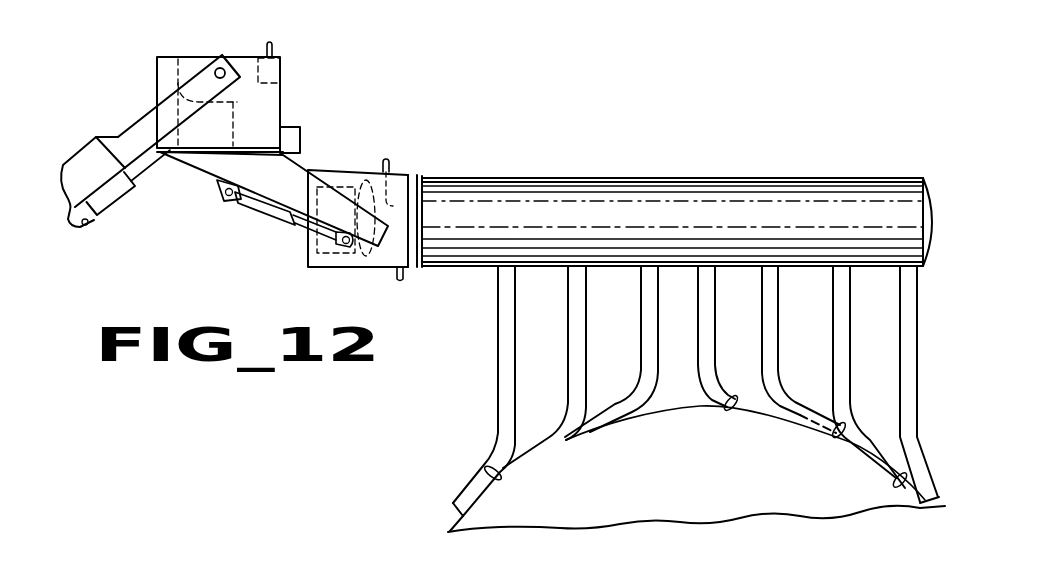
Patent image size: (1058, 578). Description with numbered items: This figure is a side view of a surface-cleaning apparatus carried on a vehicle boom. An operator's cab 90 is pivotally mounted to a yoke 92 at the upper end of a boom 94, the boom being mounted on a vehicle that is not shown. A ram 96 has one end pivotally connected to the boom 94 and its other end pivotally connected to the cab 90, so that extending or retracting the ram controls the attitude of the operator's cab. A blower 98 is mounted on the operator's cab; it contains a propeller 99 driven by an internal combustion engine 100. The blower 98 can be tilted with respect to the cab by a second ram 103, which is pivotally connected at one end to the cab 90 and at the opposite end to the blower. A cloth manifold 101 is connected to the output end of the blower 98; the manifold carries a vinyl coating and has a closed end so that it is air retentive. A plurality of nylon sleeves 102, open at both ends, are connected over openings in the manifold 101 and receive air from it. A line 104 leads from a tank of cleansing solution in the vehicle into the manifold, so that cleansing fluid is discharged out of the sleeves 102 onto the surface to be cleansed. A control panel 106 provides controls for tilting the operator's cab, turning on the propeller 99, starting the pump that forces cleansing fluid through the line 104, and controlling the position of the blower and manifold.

The operator's cab 90 is at (276, 93).
The yoke 92 is at (153, 113).
The boom 94 is at (91, 142).
The ram 96 is at (109, 208).
The blower 98 is at (321, 268).
The propeller 99 is at (369, 182).
The internal combustion engine 100 is at (315, 247).
The cloth manifold 101 is at (657, 178).
The nylon sleeves 102 is at (698, 331).
The ram 103 is at (270, 211).
The line 104 is at (395, 273).
The control panel 106 is at (274, 49).